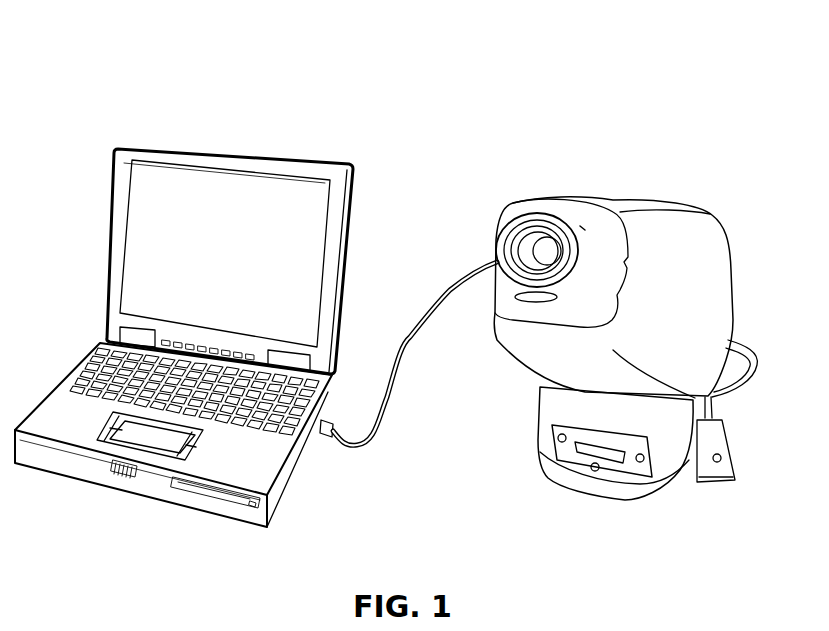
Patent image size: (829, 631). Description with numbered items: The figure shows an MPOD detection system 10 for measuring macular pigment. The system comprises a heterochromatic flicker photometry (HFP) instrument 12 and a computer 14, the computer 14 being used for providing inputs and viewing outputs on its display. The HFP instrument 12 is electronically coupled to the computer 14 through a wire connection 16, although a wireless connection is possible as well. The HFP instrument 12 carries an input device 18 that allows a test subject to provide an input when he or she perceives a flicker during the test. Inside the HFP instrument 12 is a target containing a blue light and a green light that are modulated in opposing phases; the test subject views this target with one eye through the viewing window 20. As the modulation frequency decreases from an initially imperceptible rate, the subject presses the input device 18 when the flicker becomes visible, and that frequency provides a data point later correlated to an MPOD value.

The MPOD detection system 10 is at (261, 62).
The heterochromatic flicker photometry (HFP) instrument 12 is at (677, 258).
The computer 14 is at (145, 148).
The wire connection 16 is at (455, 283).
The input device 18 is at (717, 465).
The viewing window 20 is at (545, 258).